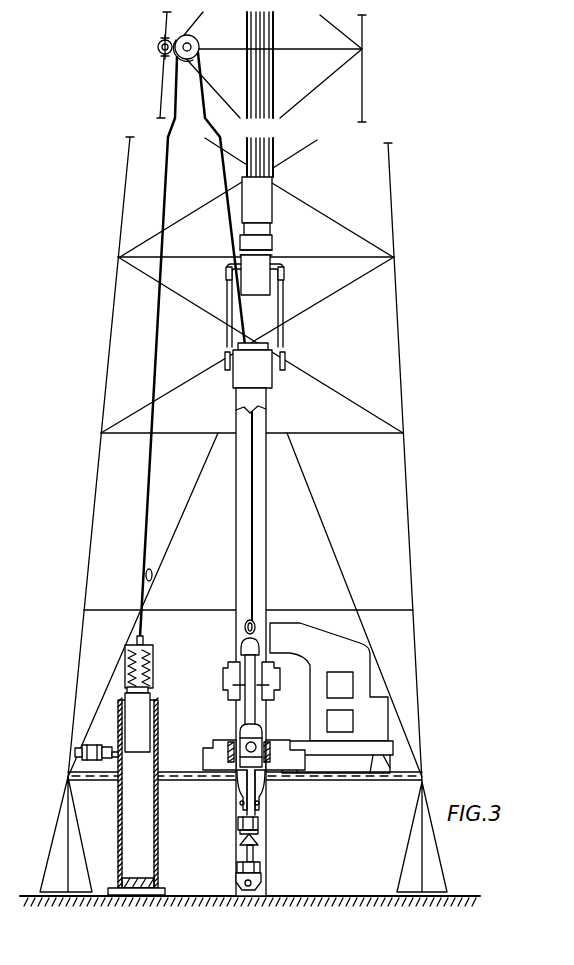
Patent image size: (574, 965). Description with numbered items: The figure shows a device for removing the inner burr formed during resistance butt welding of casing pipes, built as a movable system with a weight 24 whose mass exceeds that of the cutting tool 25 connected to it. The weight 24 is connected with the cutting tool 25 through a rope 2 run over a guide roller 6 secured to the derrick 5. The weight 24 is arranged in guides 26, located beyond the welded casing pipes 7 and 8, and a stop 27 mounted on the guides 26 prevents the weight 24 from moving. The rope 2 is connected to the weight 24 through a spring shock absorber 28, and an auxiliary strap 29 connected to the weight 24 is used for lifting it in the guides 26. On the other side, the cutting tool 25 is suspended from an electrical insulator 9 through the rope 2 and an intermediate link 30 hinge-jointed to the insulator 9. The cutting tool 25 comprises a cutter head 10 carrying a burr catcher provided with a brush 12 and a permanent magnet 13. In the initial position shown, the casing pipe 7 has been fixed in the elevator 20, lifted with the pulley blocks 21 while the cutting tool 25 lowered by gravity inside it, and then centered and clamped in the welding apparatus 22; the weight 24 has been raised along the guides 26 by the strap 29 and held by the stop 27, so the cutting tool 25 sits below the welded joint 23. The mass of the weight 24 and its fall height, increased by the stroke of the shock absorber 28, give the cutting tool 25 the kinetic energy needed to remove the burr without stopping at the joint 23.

The rope 2 is at (160, 340).
The derrick 5 is at (125, 175).
The guide roller 6 is at (198, 37).
The casing pipe 7 is at (262, 508).
The casing pipe 8 is at (252, 830).
The electrical insulator 9 is at (262, 624).
The cutter head 10 is at (238, 818).
The brush 12 is at (260, 868).
The permanent magnet 13 is at (236, 873).
The elevator 20 is at (267, 380).
The pulley blocks 21 is at (273, 171).
The welding apparatus 22 is at (360, 658).
The welded joint 23 is at (260, 680).
The weight 24 is at (135, 702).
The cutting tool 25 is at (234, 722).
The guides 26 is at (158, 798).
The stop 27 is at (92, 742).
The spring shock absorber 28 is at (127, 660).
The auxiliary strap 29 is at (151, 592).
The intermediate link 30 is at (246, 663).